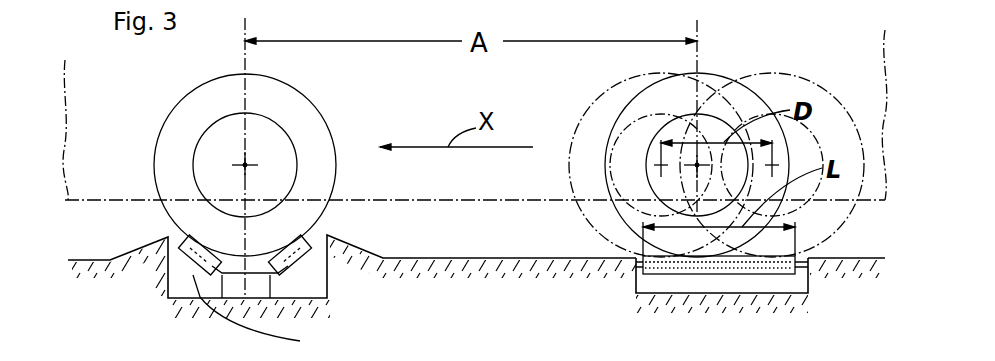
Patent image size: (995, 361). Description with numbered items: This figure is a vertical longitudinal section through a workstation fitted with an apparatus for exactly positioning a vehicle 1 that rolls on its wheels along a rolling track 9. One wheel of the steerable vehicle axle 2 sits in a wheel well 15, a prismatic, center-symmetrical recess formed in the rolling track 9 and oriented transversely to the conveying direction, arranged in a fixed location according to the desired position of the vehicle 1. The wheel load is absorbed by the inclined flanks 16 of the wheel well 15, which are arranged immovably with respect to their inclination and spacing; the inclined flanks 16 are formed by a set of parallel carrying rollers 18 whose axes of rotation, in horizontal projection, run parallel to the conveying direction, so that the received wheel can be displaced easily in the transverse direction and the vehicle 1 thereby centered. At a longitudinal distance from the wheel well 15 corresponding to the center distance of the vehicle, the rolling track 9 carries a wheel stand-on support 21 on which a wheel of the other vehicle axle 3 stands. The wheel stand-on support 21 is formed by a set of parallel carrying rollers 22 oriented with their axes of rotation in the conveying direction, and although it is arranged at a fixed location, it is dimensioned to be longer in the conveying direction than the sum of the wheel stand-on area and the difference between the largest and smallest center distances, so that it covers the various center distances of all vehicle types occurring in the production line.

The vehicle 1 is at (70, 108).
The steerable vehicle axle 2 is at (305, 136).
The vehicle axle 3 is at (633, 137).
The rolling track 9 is at (428, 258).
The wheel well 15 is at (330, 283).
The inclined flanks 16 is at (280, 236).
The carrying rollers 18 is at (287, 297).
The wheel stand-on support 21 is at (652, 286).
The carrying rollers 22 is at (772, 274).